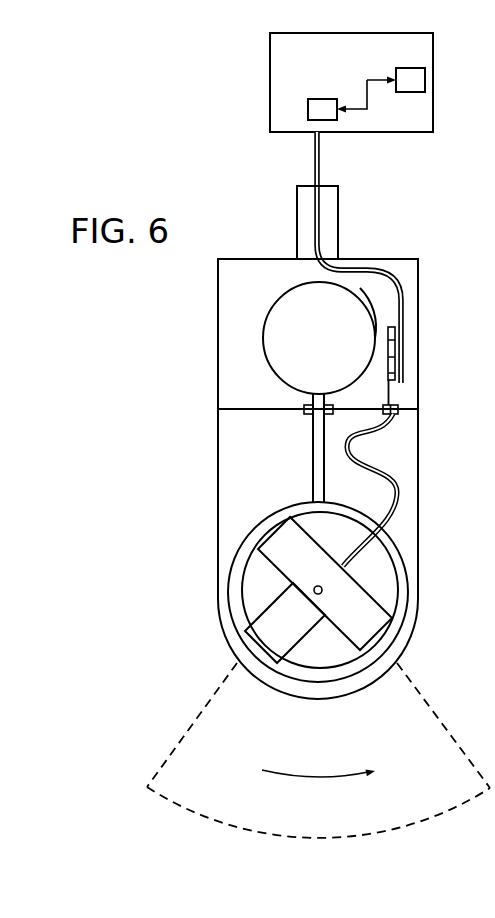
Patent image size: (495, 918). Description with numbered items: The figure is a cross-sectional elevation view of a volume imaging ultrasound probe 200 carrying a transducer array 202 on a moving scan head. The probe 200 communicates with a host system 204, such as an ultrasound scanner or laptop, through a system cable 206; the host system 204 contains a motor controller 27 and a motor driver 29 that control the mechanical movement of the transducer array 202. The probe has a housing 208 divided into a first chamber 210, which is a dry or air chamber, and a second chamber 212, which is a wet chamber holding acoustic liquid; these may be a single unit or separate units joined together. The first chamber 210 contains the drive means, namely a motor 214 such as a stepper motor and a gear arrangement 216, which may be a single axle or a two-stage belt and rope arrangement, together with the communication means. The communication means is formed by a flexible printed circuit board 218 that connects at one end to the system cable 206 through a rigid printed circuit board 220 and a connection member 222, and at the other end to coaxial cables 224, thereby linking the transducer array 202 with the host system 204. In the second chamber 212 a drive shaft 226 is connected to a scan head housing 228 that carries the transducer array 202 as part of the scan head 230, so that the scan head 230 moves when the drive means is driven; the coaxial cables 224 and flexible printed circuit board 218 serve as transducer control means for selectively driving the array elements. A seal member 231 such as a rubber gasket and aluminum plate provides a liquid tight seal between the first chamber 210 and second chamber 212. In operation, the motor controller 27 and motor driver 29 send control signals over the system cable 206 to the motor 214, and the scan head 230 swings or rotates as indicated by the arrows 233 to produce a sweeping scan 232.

The volume imaging ultrasound probe 200 is at (158, 685).
The transducer array 202 is at (273, 618).
The host system 204 is at (270, 82).
The system cable 206 is at (315, 166).
The housing 208 is at (249, 256).
The first chamber 210 is at (405, 268).
The second chamber 212 is at (235, 508).
The motor 214 is at (262, 345).
The gear arrangement 216 is at (313, 446).
The flexible printed circuit board 218 is at (398, 398).
The rigid printed circuit board 220 is at (373, 310).
The connection member 222 is at (405, 317).
The coaxial cables 224 is at (398, 497).
The drive shaft 226 is at (315, 587).
The scan head housing 228 is at (392, 585).
The scan head 230 is at (400, 639).
The seal member 231 is at (305, 405).
The sweeping scan 232 is at (173, 802).
The arrows 233 is at (323, 777).
The motor controller 27 is at (426, 77).
The motor driver 29 is at (323, 122).